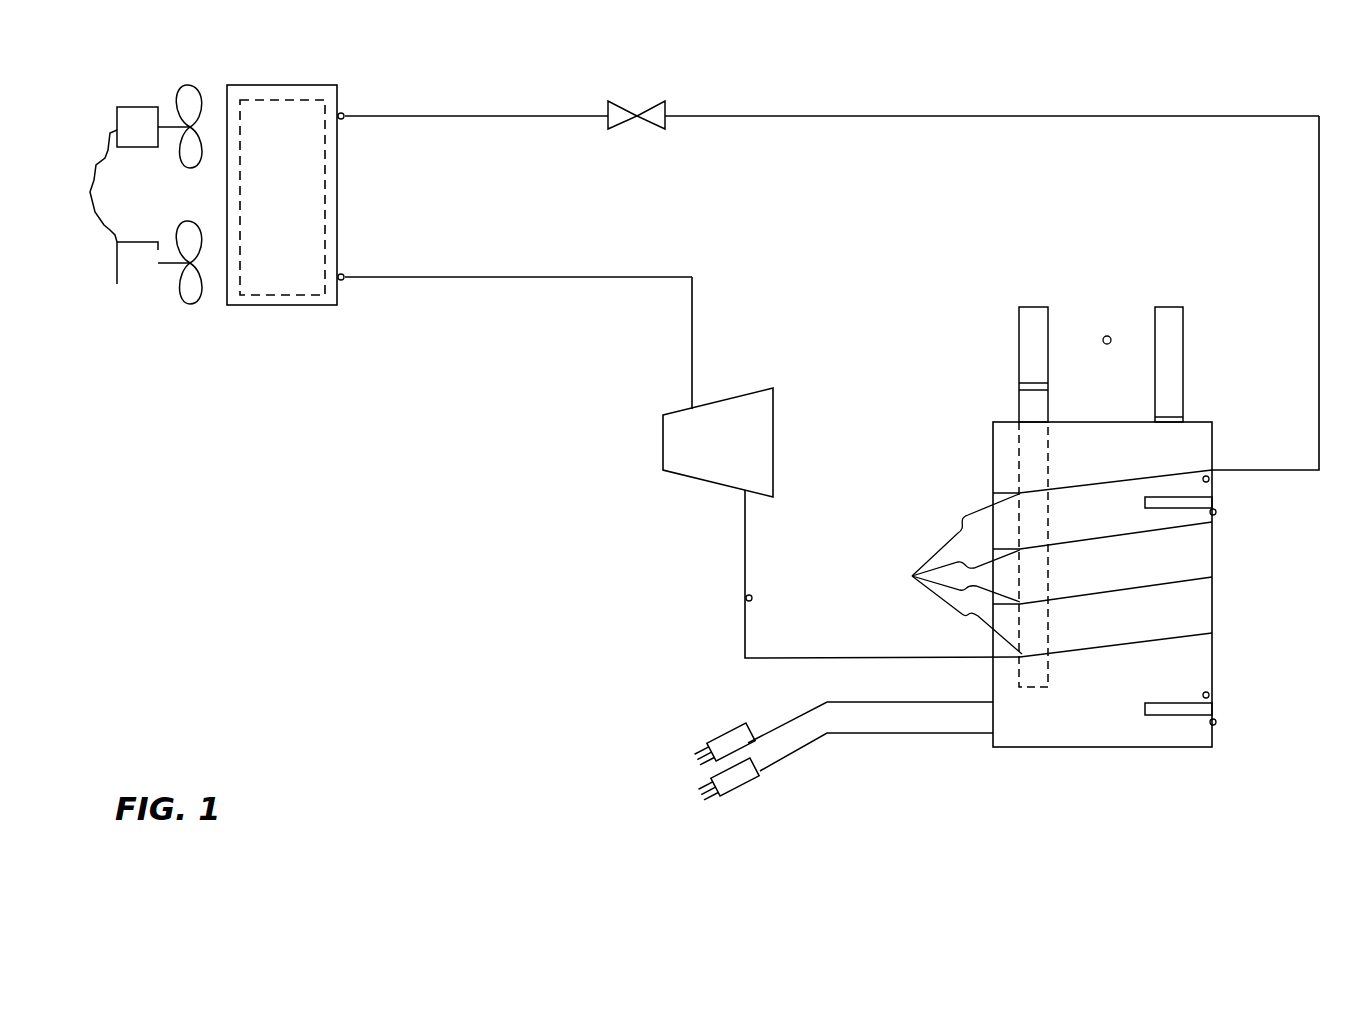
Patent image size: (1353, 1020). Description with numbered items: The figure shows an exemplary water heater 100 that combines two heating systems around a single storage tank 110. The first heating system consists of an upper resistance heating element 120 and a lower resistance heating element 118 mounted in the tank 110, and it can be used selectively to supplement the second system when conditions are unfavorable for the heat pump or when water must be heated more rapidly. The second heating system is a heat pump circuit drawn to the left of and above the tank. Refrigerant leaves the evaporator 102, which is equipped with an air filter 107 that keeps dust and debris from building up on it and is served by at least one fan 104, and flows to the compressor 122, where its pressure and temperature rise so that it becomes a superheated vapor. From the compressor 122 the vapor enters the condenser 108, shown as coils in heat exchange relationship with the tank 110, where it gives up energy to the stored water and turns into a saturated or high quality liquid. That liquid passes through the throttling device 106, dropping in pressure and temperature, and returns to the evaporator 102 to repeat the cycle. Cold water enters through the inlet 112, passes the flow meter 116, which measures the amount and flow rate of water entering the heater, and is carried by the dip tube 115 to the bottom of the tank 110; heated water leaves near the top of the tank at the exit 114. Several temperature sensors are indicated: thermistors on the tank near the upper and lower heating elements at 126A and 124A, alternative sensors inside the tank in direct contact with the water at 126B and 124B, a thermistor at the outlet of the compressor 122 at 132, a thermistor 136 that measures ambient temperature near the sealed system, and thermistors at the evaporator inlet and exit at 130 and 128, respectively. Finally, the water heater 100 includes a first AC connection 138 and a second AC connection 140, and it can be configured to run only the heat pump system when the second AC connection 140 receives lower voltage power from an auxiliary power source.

The water heater 100 is at (272, 629).
The evaporator 102 is at (300, 206).
The fan 104 is at (126, 194).
The throttling device 106 is at (640, 110).
The air filter 107 is at (246, 303).
The condenser 108 is at (1093, 385).
The tank 110 is at (1013, 752).
The inlet 112 is at (1032, 307).
The exit 114 is at (1175, 307).
The dip tube 115 is at (1030, 452).
The flow meter 116 is at (1033, 380).
The lower resistance heating element 118 is at (1145, 708).
The upper resistance heating element 120 is at (1145, 502).
The compressor 122 is at (738, 456).
The lower temperature sensor on tank 124A is at (1217, 722).
The lower temperature sensor inside tank 124B is at (1210, 695).
The upper temperature sensor on tank 126A is at (1217, 512).
The upper temperature sensor inside tank 126B is at (1210, 479).
The evaporator exit temperature thermistor 128 is at (343, 282).
The evaporator inlet temperature thermistor 130 is at (345, 112).
The compressor outlet thermistor 132 is at (753, 597).
The ambient temperature thermistor 136 is at (1103, 335).
The first AC connection 138 is at (773, 720).
The second AC connection 140 is at (787, 752).